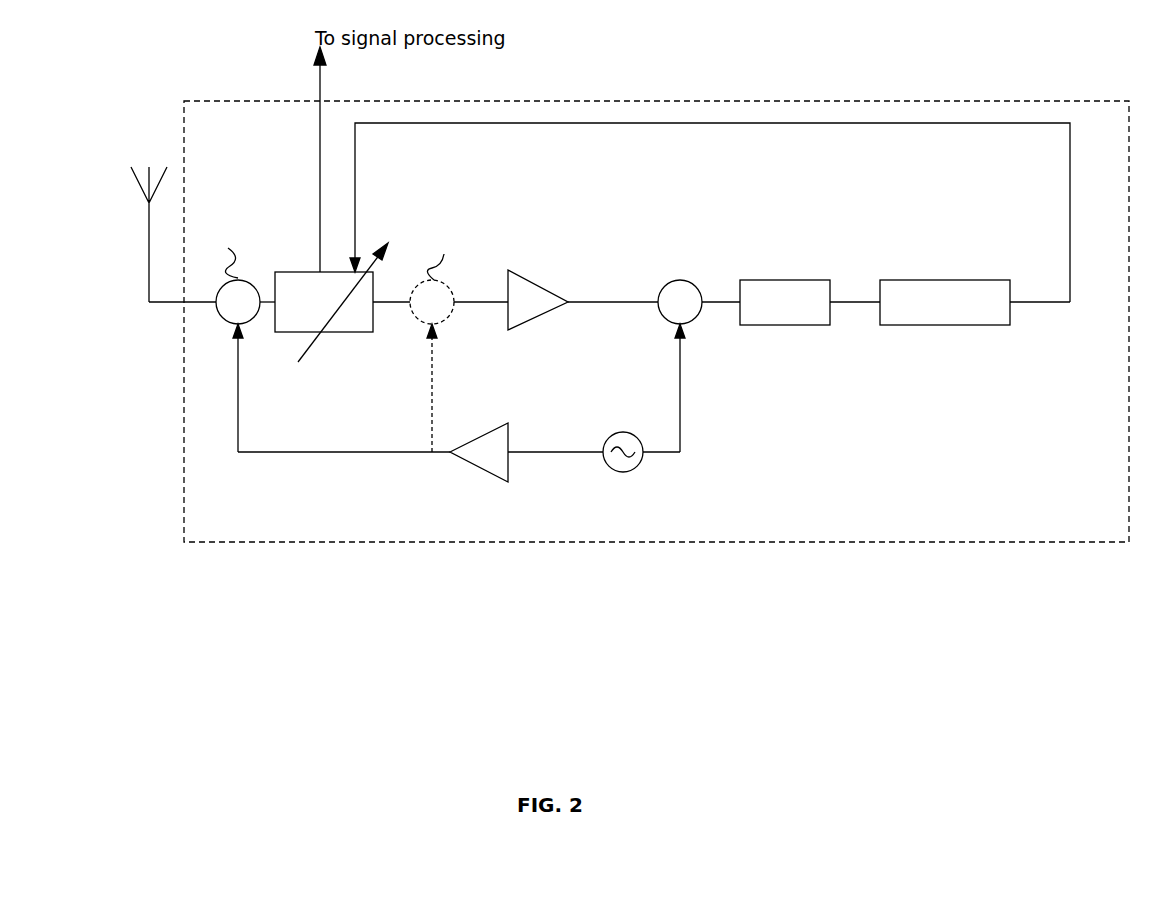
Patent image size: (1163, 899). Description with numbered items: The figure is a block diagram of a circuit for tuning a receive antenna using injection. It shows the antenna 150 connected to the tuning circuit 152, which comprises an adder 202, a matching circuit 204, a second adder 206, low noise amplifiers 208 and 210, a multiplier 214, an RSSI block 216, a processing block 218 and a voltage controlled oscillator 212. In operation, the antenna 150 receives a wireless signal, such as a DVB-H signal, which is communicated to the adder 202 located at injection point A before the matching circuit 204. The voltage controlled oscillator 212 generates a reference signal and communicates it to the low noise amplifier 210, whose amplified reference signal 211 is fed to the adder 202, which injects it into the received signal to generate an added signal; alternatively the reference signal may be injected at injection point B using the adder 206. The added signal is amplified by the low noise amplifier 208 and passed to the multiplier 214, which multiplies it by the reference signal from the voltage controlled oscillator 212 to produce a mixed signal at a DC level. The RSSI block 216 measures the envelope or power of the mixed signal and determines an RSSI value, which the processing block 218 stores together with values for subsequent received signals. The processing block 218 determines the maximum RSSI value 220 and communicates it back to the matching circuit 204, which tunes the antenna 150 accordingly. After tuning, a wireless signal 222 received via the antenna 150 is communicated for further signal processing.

The antenna 150 is at (143, 191).
The tuning circuit 152 is at (447, 543).
The adder 202 is at (228, 322).
The matching circuit 204 is at (350, 333).
The adder 206 is at (428, 322).
The low noise amplifier 208 is at (535, 318).
The low noise amplifier 210 is at (488, 470).
The amplified reference signal 211 is at (285, 452).
The voltage controlled oscillator 212 is at (627, 432).
The multiplier 214 is at (680, 280).
The RSSI block 216 is at (784, 280).
The processing block 218 is at (934, 278).
The maximum RSSI value 220 is at (670, 123).
The wireless signal 222 is at (318, 78).